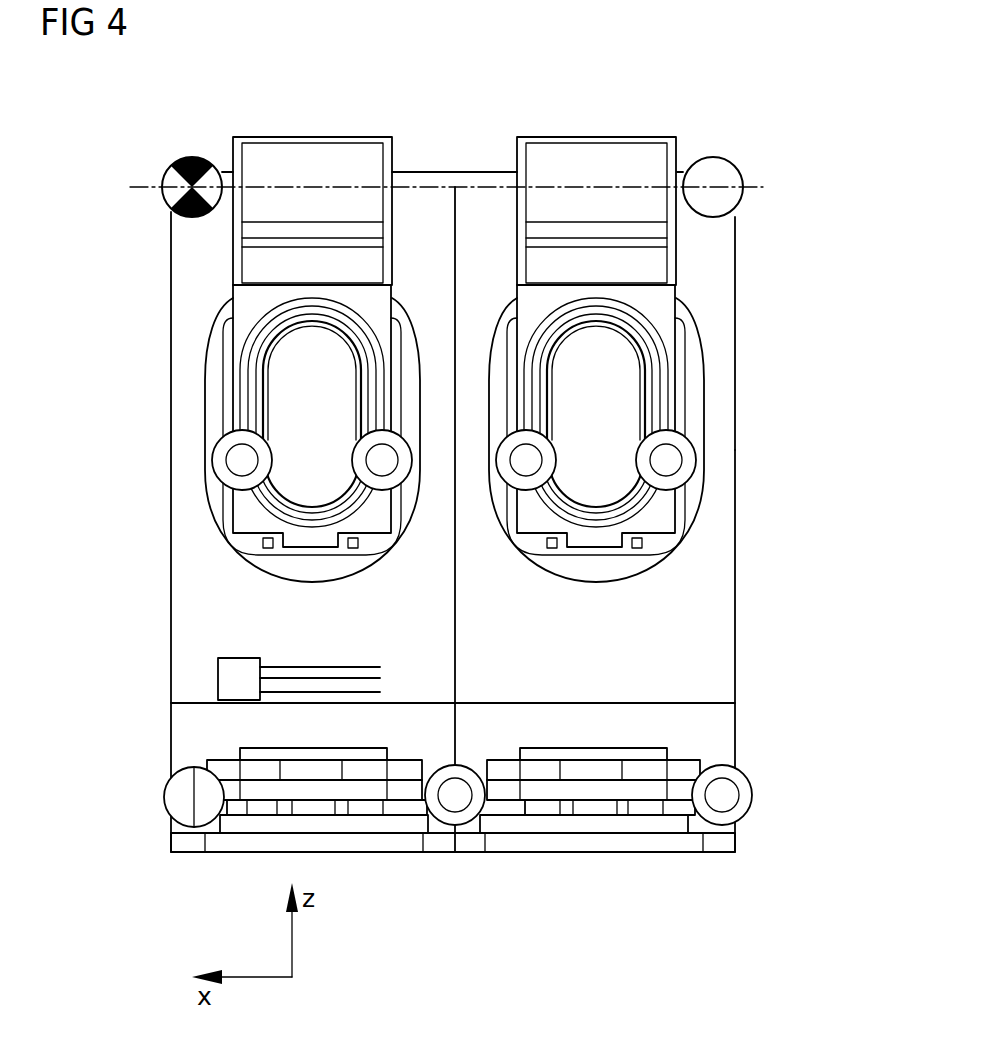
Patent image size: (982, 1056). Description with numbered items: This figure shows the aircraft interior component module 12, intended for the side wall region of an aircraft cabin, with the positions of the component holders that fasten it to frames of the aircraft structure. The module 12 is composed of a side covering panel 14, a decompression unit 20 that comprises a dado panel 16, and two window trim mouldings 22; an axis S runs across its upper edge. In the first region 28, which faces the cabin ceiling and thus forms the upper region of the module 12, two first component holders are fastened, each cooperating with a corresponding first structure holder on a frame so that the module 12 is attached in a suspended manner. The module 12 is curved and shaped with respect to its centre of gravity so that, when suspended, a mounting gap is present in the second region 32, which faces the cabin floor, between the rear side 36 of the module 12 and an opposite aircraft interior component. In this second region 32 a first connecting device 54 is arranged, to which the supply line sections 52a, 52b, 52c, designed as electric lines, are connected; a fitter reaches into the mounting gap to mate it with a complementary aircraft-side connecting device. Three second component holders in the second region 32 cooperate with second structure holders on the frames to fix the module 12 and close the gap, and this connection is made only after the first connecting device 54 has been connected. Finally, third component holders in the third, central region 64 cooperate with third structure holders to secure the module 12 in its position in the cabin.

The aircraft interior component module 12 is at (520, 96).
The side covering panel 14 is at (727, 298).
The dado panel 16 is at (727, 722).
The decompression unit 20 is at (792, 760).
The window trim moulding 22 is at (663, 515).
The first region 28 is at (792, 234).
The second region 32 is at (104, 762).
The rear side 36 is at (727, 598).
The supply line section 52a is at (373, 666).
The supply line section 52b is at (346, 677).
The supply line section 52c is at (298, 691).
The first connecting device 54 is at (238, 660).
The third, central region 64 is at (124, 476).
The axis of symmetry S is at (420, 185).